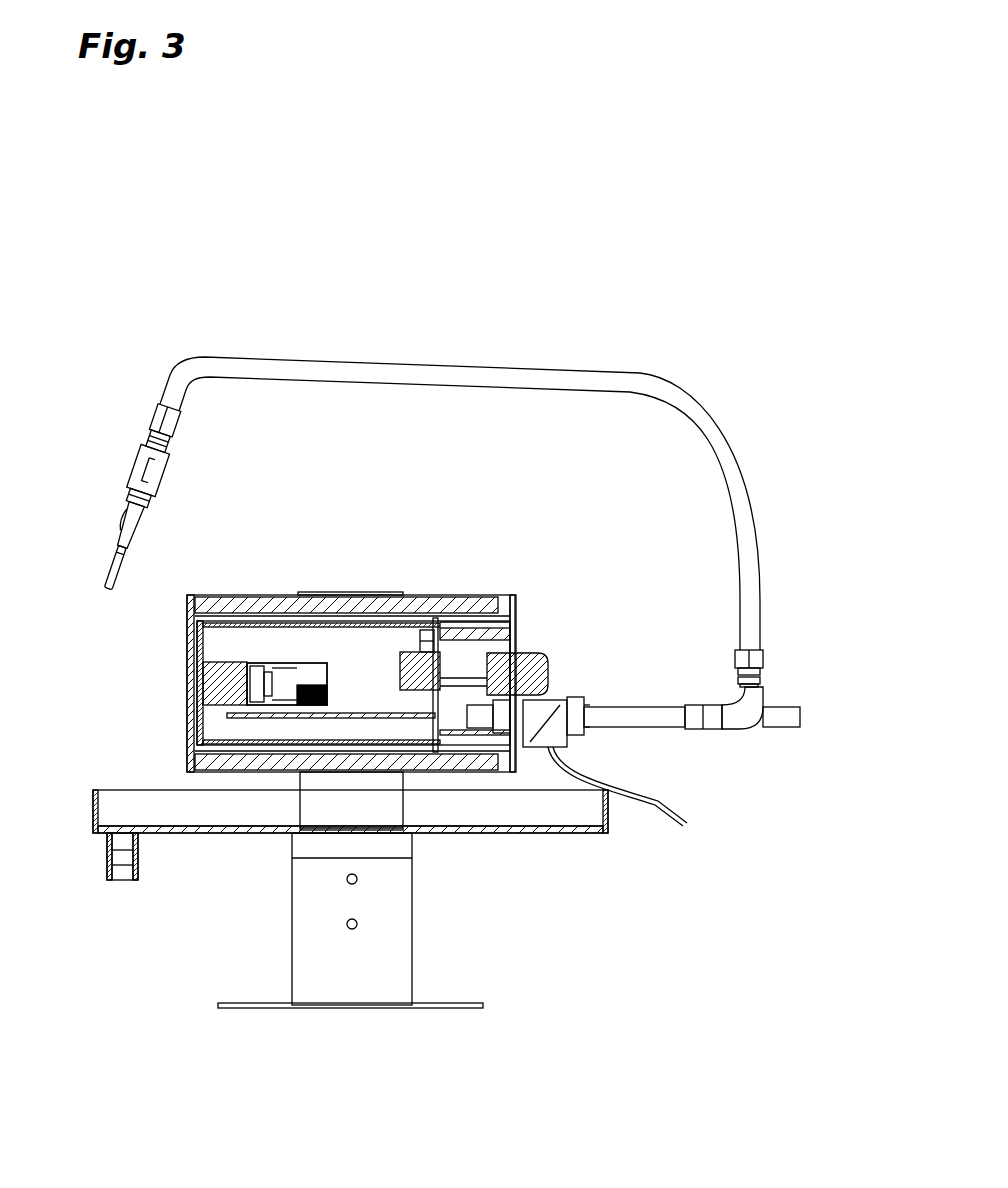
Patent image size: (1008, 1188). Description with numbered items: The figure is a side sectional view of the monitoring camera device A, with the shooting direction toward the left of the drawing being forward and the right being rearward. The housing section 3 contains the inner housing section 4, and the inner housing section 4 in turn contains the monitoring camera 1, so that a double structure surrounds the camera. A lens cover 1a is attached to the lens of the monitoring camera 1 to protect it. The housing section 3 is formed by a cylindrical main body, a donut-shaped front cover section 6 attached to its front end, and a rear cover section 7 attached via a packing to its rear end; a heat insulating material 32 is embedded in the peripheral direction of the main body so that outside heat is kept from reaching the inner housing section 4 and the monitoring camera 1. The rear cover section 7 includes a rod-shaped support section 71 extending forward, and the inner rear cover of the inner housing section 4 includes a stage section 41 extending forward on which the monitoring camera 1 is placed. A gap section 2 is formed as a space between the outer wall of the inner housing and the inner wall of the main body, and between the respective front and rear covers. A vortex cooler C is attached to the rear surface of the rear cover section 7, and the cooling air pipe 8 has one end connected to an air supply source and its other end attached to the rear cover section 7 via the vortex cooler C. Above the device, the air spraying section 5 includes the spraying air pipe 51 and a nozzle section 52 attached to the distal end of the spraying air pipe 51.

The monitoring camera 1 is at (283, 693).
The lens cover 1a is at (215, 672).
The gap section 2 is at (500, 748).
The housing section 3 is at (480, 595).
The heat insulating material 32 is at (426, 603).
The inner housing section 4 is at (197, 742).
The stage section 41 is at (363, 712).
The air spraying section 5 is at (52, 382).
The spraying air pipe 51 is at (165, 397).
The nozzle section 52 is at (142, 468).
The front cover section 6 is at (190, 727).
The rear cover section 7 is at (516, 628).
The support section 71 is at (480, 632).
The cooling air pipe 8 is at (662, 780).
The monitoring camera device A is at (620, 573).
The vortex cooler C is at (568, 690).